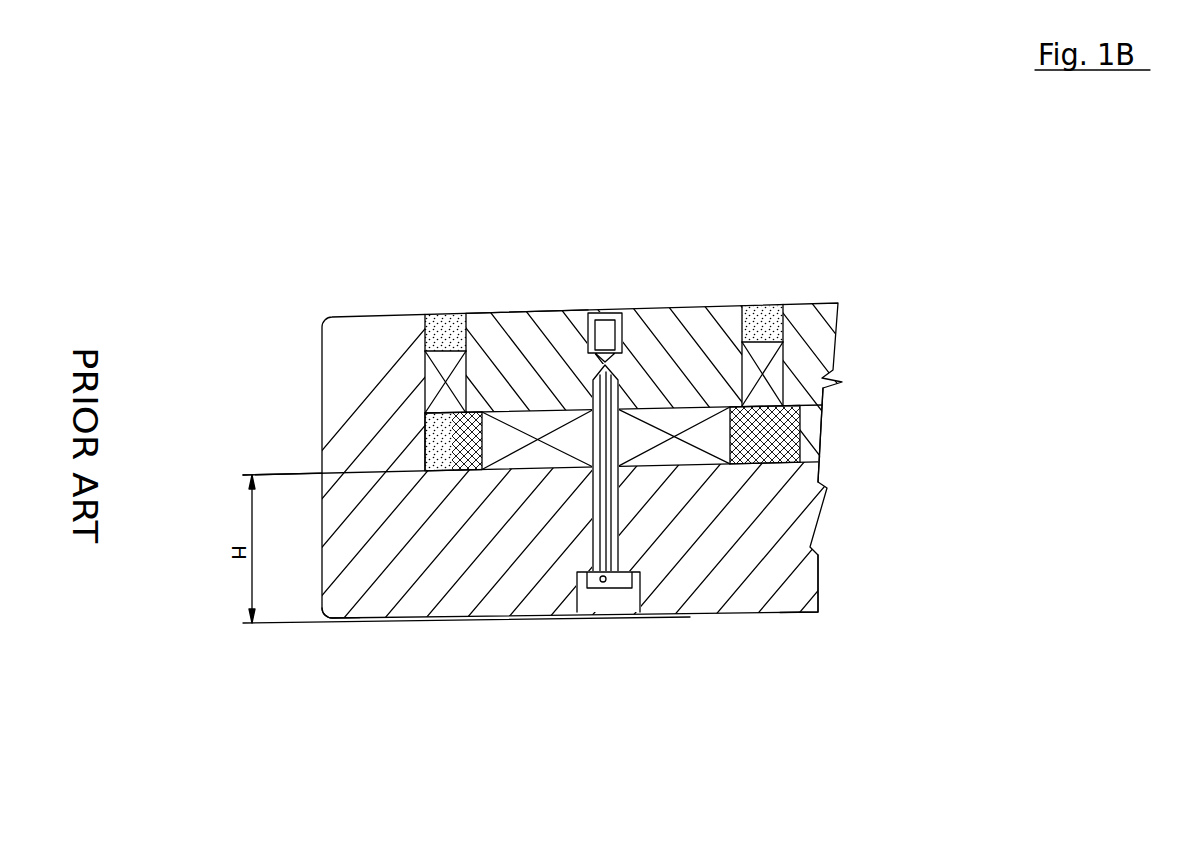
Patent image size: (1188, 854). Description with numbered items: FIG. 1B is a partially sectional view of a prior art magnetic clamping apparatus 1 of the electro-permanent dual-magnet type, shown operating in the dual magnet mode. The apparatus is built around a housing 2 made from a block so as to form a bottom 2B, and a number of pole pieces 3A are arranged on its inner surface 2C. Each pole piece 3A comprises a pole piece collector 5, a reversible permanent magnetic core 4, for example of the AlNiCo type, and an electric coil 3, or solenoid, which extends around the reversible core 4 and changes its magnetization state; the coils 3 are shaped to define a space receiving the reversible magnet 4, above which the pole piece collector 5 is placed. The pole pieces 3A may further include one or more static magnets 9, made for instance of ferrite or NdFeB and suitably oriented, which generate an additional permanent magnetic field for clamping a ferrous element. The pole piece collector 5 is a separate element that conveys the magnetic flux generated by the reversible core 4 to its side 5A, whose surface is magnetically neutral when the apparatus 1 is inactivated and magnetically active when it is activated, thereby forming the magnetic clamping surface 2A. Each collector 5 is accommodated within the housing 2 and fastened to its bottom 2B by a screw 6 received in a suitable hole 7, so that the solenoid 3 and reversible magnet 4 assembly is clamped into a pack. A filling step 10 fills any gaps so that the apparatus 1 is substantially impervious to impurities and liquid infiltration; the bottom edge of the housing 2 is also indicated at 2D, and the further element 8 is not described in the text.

The magnetic clamping apparatus 1 is at (937, 122).
The housing 2 is at (393, 582).
The magnetic clamping surface 2A is at (907, 242).
The bottom 2B is at (342, 620).
The inner surface 2C is at (810, 461).
The base body bottom edge 2D is at (795, 612).
The electric coil 3 is at (750, 462).
The pole piece 3A is at (773, 152).
The reversible permanent magnetic core 4 is at (685, 460).
The pole piece collector 5 is at (662, 358).
The side 5A is at (508, 315).
The screw 6 is at (603, 582).
The hole 7 is at (633, 600).
The cap nut 8 is at (601, 332).
The static magnet 9 is at (765, 379).
The filling step 10 is at (760, 325).